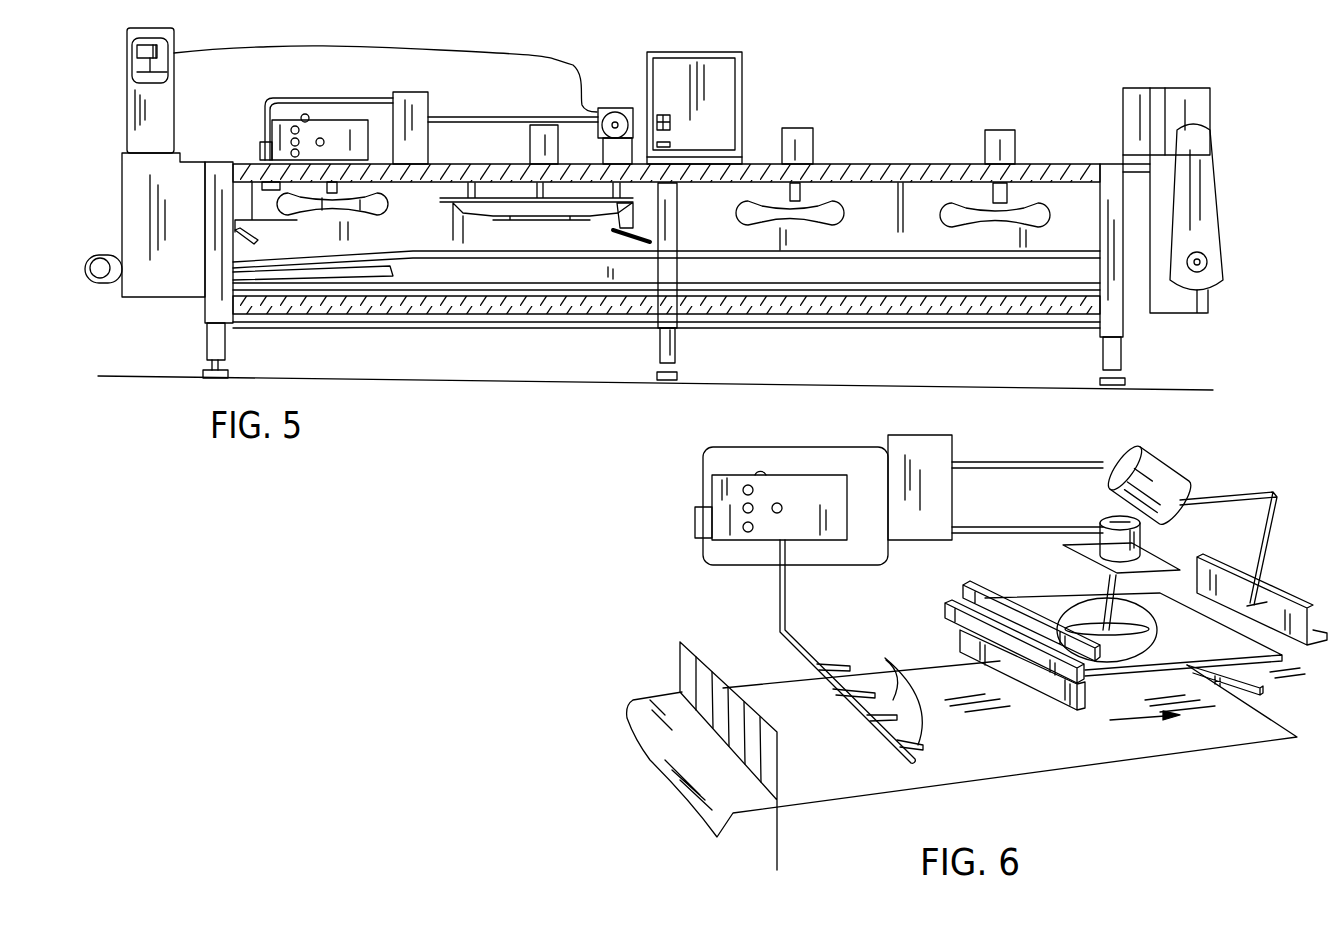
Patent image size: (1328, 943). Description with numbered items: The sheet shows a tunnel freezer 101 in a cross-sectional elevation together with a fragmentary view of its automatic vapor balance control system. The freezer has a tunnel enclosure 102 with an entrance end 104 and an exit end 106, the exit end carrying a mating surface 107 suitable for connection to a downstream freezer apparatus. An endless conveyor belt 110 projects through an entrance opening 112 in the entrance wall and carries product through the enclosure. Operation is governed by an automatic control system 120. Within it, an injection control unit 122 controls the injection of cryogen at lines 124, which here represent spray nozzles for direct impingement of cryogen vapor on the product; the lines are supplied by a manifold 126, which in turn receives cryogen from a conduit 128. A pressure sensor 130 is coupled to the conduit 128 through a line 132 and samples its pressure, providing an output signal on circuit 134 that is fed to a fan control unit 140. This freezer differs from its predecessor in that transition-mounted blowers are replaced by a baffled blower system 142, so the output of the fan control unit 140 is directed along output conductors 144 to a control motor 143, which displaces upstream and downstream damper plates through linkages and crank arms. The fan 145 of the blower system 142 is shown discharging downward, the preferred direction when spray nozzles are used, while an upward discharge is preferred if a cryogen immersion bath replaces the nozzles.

In FIG. 5, the tunnel freezer 101 is at (850, 130).
In FIG. 5, the tunnel enclosure 102 is at (908, 182).
In FIG. 5, the entrance end 104 is at (122, 183).
In FIG. 5, the exit end 106 is at (1110, 193).
In FIG. 5, the mating surface 107 is at (1123, 303).
In FIG. 5, the endless conveyor belt 110 is at (803, 255).
In FIG. 6, the endless conveyor belt 110 is at (1063, 755).
In FIG. 5, the entrance opening 112 is at (120, 252).
In FIG. 6, the entrance opening 112 is at (690, 680).
In FIG. 5, the automatic control system 120 is at (446, 107).
In FIG. 6, the automatic control system 120 is at (1087, 535).
In FIG. 5, the injection control unit 122 is at (337, 120).
In FIG. 6, the injection control unit 122 is at (833, 547).
In FIG. 5, the lines 124 is at (258, 238).
In FIG. 6, the lines 124 is at (870, 693).
In FIG. 6, the manifold 126 is at (840, 708).
In FIG. 6, the conduit 128 is at (788, 597).
In FIG. 6, the pressure sensor 130 is at (695, 518).
In FIG. 6, the line 132 is at (740, 567).
In FIG. 5, the circuit 134 is at (307, 98).
In FIG. 6, the circuit 134 is at (750, 447).
In FIG. 5, the fan control unit 140 is at (420, 92).
In FIG. 6, the fan control unit 140 is at (903, 435).
In FIG. 5, the blower system 142 is at (620, 224).
In FIG. 6, the blower system 142 is at (1293, 593).
In FIG. 5, the control motor 143 is at (615, 112).
In FIG. 6, the control motor 143 is at (1153, 457).
In FIG. 5, the circuit 144 is at (465, 122).
In FIG. 6, the circuit 144 is at (1017, 527).
In FIG. 5, the fan 145 is at (515, 220).
In FIG. 6, the fan 145 is at (1093, 600).